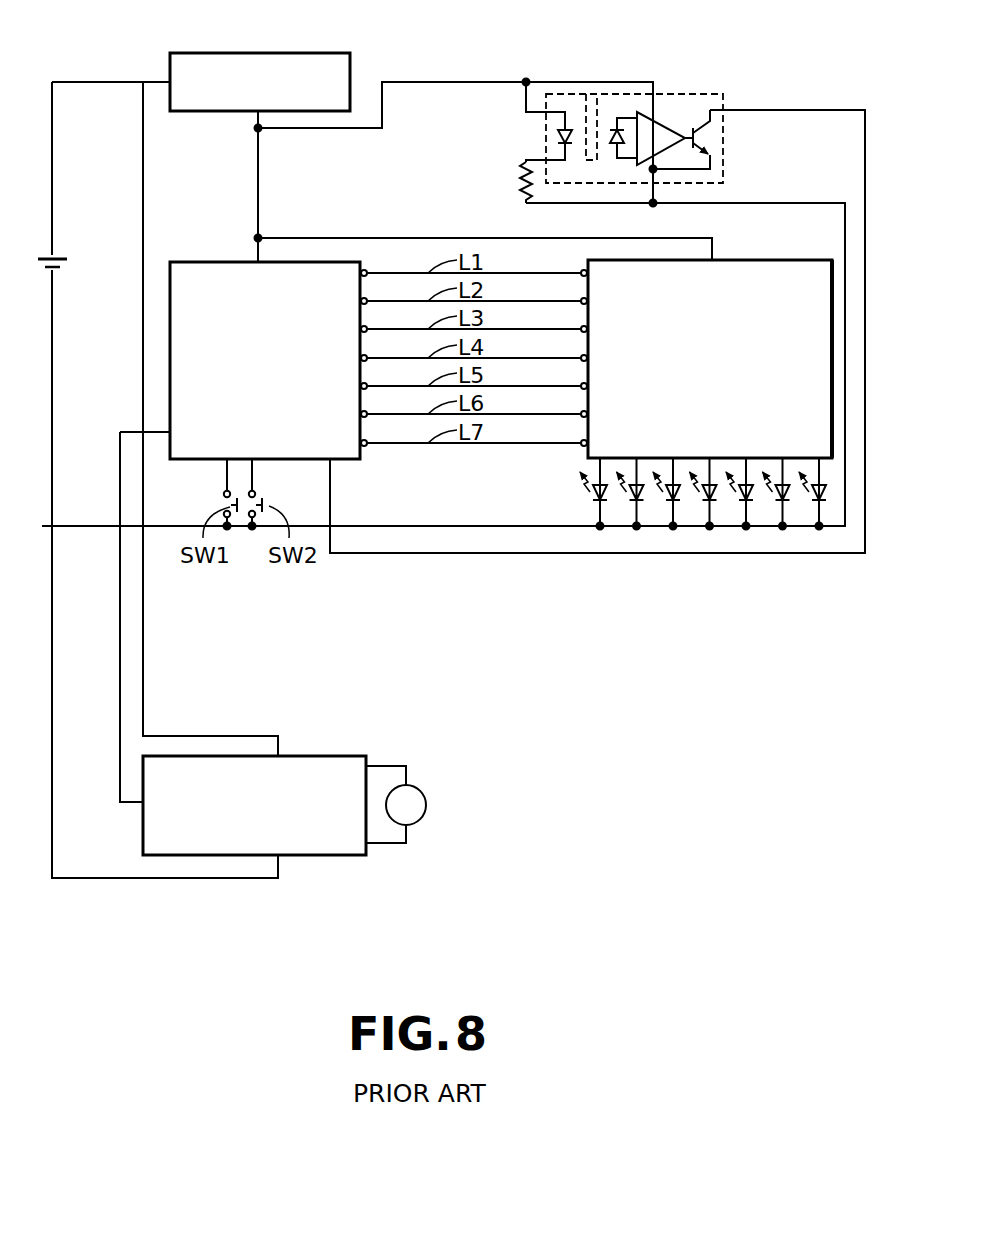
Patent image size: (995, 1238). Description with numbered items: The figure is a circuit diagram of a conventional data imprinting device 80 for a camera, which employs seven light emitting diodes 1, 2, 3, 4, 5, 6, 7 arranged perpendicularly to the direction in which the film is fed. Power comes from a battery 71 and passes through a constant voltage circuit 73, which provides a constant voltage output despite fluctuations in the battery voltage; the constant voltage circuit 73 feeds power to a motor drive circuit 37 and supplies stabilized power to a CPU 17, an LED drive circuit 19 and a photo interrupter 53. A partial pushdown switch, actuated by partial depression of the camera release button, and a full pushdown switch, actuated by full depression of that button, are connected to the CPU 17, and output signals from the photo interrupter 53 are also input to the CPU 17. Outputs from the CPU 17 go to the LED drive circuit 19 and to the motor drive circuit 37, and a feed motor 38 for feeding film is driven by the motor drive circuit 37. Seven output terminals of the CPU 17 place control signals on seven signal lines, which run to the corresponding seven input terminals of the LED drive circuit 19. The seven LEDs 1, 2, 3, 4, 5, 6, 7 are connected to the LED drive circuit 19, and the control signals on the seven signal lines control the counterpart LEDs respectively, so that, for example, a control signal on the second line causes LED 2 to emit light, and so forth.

The constant voltage circuit 73 is at (218, 53).
The photo interrupter 53 is at (563, 77).
The battery 71 is at (57, 258).
The CPU 17 is at (230, 268).
The light emitting diode drive circuit 19 is at (744, 268).
The light emitting diode 1 is at (596, 497).
The light emitting diode 2 is at (632, 497).
The light emitting diode 3 is at (669, 497).
The light emitting diode 4 is at (706, 497).
The light emitting diode 5 is at (742, 497).
The light emitting diode 6 is at (778, 497).
The light emitting diode 7 is at (815, 497).
The motor drive circuit 37 is at (302, 758).
The feed motor 38 is at (427, 797).
The data imprinting device 80 is at (713, 638).